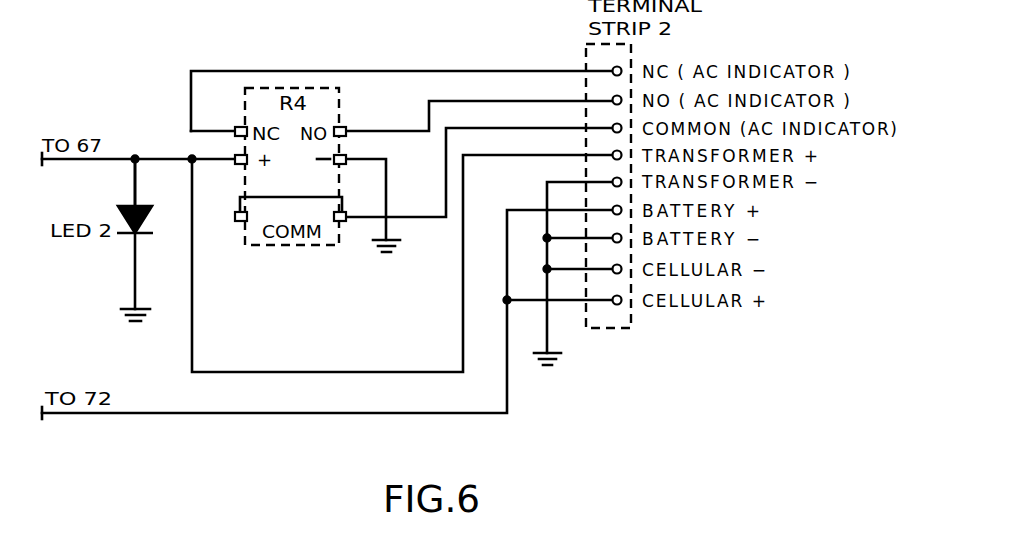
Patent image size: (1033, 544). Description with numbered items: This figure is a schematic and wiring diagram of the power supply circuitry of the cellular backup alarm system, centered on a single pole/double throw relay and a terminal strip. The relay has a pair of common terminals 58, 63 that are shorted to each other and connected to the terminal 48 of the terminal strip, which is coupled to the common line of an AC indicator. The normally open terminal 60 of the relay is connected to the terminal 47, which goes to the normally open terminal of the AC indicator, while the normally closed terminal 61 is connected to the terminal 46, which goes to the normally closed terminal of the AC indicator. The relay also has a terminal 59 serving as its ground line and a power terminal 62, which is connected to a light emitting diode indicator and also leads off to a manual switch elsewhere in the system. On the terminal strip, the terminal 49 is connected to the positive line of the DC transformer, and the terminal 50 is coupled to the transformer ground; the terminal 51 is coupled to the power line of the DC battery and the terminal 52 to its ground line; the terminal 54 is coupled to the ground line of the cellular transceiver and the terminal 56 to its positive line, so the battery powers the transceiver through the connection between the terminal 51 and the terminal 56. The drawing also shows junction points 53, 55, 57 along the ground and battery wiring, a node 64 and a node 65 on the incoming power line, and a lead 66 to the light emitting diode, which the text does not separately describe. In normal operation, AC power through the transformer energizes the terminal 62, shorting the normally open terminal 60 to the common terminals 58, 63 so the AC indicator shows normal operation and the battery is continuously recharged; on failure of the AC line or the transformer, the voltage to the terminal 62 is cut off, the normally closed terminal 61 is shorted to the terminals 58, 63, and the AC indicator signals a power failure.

The terminal 46 is at (605, 61).
The terminal 47 is at (607, 91).
The terminal 48 is at (607, 118).
The terminal 49 is at (607, 146).
The terminal 50 is at (607, 172).
The terminal 51 is at (606, 200).
The terminal 52 is at (607, 228).
The ground junction node 53 is at (534, 238).
The terminal 54 is at (608, 260).
The ground junction node 55 is at (534, 269).
The terminal 56 is at (607, 292).
The battery + junction node 57 is at (494, 299).
The common terminal 58 is at (354, 206).
The terminal 59 is at (354, 151).
The normally open terminal 60 is at (354, 121).
The normally closed terminal 61 is at (229, 121).
The terminal 62 is at (227, 151).
The common terminal 63 is at (227, 224).
The junction node 64 is at (183, 148).
The junction node 65 is at (126, 148).
The LED 2 anode lead 66 is at (152, 184).